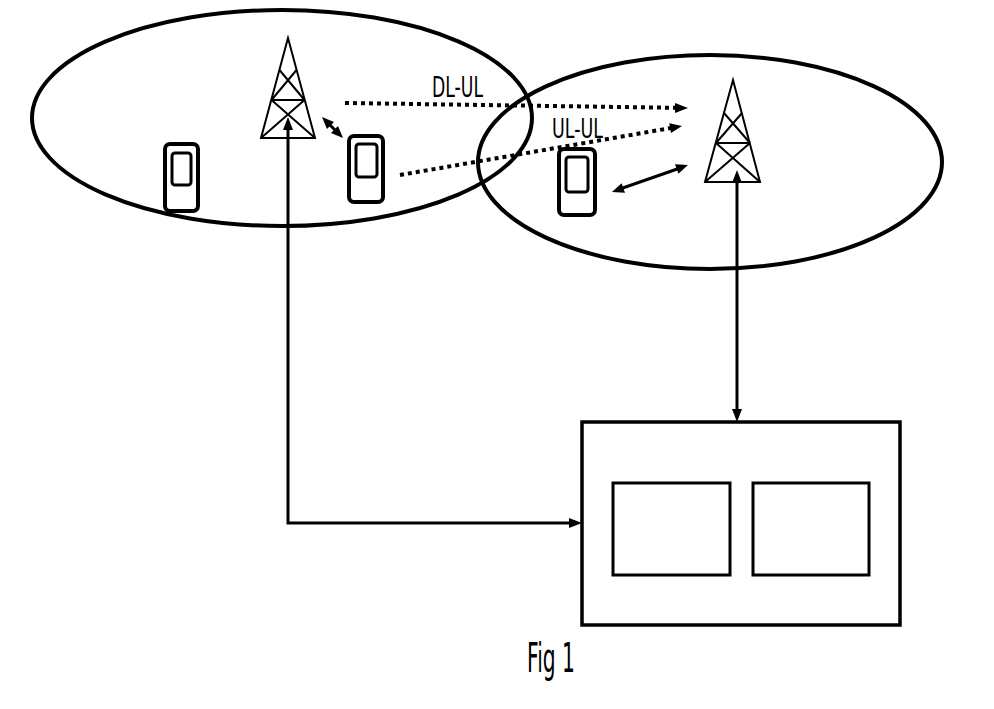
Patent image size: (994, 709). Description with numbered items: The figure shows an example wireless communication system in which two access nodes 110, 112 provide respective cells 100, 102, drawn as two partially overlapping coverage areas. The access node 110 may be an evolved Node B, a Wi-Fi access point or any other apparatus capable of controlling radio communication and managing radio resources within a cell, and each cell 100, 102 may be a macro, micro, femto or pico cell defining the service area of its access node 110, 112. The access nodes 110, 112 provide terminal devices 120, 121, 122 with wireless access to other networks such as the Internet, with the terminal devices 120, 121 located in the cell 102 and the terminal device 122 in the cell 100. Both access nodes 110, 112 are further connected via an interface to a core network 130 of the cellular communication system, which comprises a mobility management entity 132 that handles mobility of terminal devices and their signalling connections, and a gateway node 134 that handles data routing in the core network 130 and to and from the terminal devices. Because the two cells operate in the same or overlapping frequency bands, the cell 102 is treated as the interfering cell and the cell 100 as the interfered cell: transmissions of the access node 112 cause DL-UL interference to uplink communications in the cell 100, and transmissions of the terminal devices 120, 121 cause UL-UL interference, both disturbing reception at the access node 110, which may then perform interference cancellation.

The cell 100 is at (613, 65).
The cell 102 is at (83, 60).
The access node 110 is at (747, 120).
The access node 112 is at (295, 72).
The terminal device 120 is at (383, 160).
The terminal device 121 is at (198, 167).
The terminal device 122 is at (595, 170).
The core network 130 is at (741, 523).
The mobility management entity 132 is at (671, 529).
The gateway node 134 is at (811, 529).